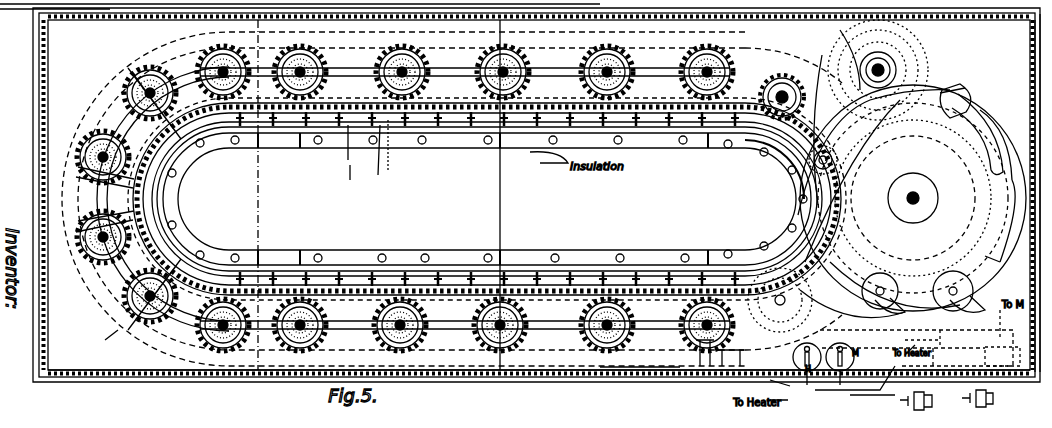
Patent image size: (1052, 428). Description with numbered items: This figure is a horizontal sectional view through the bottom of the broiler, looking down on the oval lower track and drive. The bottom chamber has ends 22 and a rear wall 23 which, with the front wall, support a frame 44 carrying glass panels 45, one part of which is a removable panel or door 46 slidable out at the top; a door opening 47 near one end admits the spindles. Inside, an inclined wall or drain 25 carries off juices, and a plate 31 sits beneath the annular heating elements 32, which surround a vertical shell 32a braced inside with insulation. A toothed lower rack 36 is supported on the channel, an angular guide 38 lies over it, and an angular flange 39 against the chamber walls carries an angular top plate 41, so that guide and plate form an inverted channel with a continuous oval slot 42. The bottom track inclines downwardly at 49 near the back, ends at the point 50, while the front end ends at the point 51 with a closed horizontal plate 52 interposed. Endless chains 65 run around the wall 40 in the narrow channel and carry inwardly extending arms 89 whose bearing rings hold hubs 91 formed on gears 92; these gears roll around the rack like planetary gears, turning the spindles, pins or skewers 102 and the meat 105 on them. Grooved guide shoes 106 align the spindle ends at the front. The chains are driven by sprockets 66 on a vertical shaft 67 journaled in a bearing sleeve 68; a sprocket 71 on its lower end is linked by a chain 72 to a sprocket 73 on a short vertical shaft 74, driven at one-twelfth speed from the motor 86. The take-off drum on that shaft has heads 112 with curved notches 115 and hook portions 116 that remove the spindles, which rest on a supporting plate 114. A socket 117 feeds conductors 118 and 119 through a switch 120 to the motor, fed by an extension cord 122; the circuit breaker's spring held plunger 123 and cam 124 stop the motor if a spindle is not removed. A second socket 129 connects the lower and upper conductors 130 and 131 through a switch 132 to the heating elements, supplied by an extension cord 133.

The ends 22 is at (1034, 53).
The rear wall 23 is at (1005, 22).
The inclined wall or drain 25 is at (533, 378).
The plate 31 is at (178, 172).
The heating elements 32 is at (186, 175).
The vertical shell 32a is at (745, 245).
The lower rack 36 is at (487, 196).
The angular guide 38 is at (180, 296).
The angular flange 39 is at (138, 42).
The wall 40 is at (86, 72).
The angular top plate 41 is at (122, 60).
The slot 42 is at (86, 112).
The frame 44 is at (650, 378).
The panels 45 is at (36, 12).
The removable panel or door 46 is at (38, 41).
The door opening 47 is at (728, 366).
The inclined portion 49 is at (722, 146).
The point 50 is at (837, 117).
The point 51 is at (778, 300).
The horizontal plate 52 is at (780, 300).
The endless drive members or chains 65 is at (82, 90).
The sprockets 66 is at (890, 60).
The vertical shaft 67 is at (906, 70).
The bearing sleeve 68 is at (895, 65).
The sprocket 71 is at (915, 82).
The chain 72 is at (980, 176).
The sprocket 73 is at (913, 186).
The short vertical shaft 74 is at (919, 196).
The motor 86 is at (862, 402).
The inwardly extending arms 89 is at (101, 342).
The hubs 91 is at (96, 276).
The gears 92 is at (660, 108).
The spindles, pins or skewers 102 is at (130, 340).
The meat 105 is at (292, 110).
The grooved guide shoes 106 is at (698, 364).
The heads 112 is at (965, 108).
The supporting plate 114 is at (984, 116).
The curved notches 115 is at (994, 124).
The hook portions 116 is at (960, 100).
The socket 117 is at (922, 340).
The conductor 118 is at (1002, 358).
The conductor 119 is at (958, 312).
The switch 120 is at (844, 369).
The extension cord 122 is at (992, 396).
The spring held plunger 123 is at (985, 285).
The cam 124 is at (992, 270).
The socket 129 is at (946, 339).
The lower conductor 130 is at (392, 163).
The upper conductor 131 is at (597, 262).
The switch 132 is at (849, 379).
The extension cord 133 is at (931, 403).